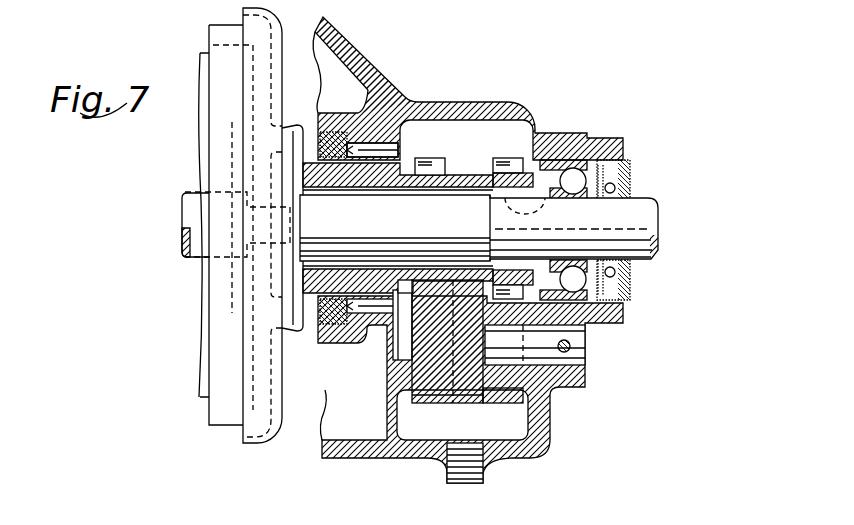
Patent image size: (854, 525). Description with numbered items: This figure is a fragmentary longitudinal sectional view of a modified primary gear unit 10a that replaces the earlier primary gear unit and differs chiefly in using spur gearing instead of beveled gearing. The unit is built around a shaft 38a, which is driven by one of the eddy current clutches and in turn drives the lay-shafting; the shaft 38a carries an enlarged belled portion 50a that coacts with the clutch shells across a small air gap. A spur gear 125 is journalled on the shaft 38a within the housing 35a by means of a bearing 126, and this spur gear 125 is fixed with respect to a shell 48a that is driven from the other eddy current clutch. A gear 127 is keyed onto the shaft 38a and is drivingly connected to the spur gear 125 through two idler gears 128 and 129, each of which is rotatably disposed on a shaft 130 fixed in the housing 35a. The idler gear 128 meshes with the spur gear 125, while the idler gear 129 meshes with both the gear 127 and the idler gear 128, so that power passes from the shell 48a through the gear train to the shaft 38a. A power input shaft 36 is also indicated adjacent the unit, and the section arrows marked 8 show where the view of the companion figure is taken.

The shell 48a is at (243, 13).
The belled portion 50a is at (209, 30).
The power input shaft 36 is at (192, 211).
The housing 35a is at (370, 68).
The bearing 126 is at (372, 145).
The spur gear 125 is at (440, 157).
The gear 127 is at (508, 157).
The primary gear unit 10a is at (599, 130).
The shaft 38a is at (647, 201).
The idler gear 128 is at (436, 404).
The idler gear 129 is at (510, 404).
The shaft 130 is at (572, 348).
The section line 8- 8 is at (511, 493).